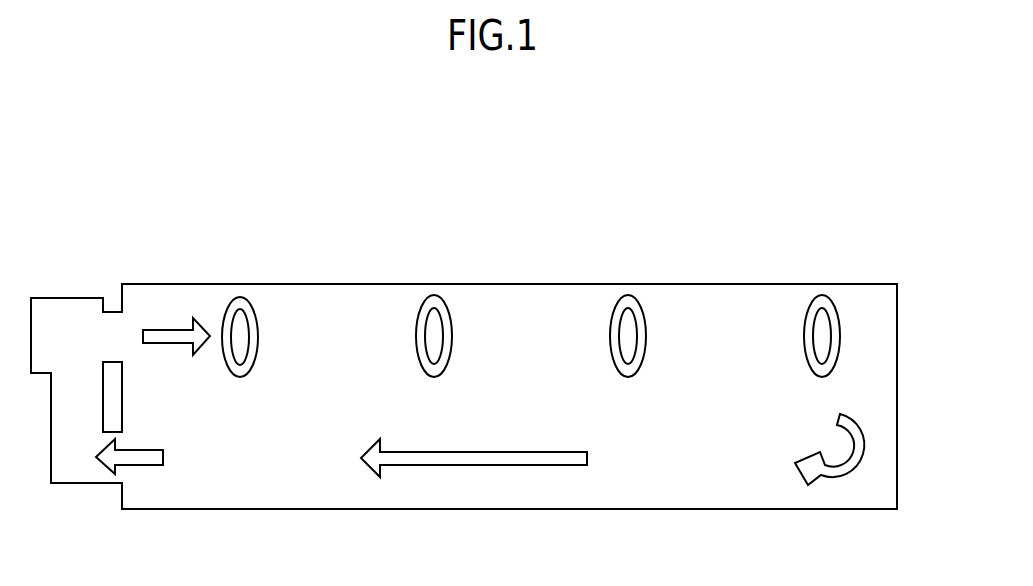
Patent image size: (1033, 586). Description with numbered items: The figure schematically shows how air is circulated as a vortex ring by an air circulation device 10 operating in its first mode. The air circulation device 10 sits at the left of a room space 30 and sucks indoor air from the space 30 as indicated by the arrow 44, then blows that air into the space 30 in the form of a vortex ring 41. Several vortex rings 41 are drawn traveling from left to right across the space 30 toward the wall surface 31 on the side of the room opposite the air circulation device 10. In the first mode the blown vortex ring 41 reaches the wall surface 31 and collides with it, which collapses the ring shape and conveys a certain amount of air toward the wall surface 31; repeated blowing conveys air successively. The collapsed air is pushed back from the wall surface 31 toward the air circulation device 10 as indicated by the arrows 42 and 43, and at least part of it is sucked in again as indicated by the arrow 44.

The air circulation device 10 is at (82, 280).
The space 30 is at (697, 285).
The wall surface 31 is at (897, 345).
The vortex ring 41 is at (256, 351).
The arrow 42 is at (836, 462).
The arrow 43 is at (515, 452).
The arrow 44 is at (164, 457).